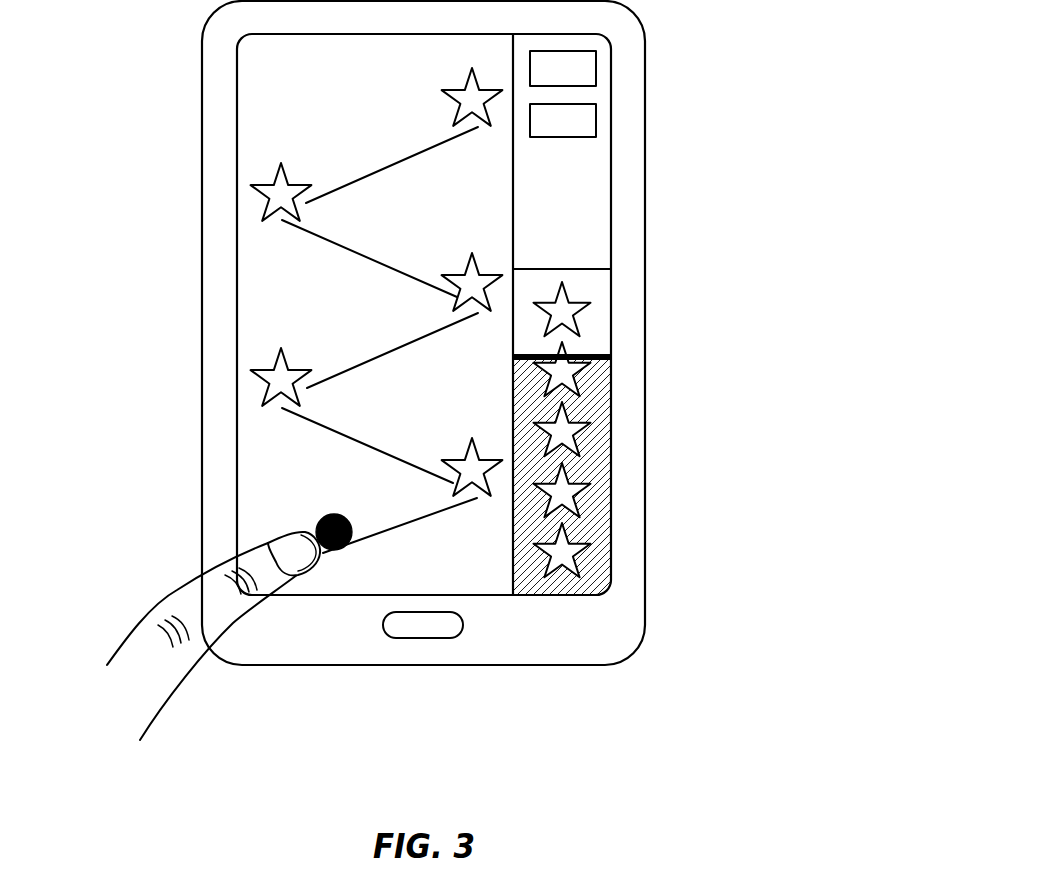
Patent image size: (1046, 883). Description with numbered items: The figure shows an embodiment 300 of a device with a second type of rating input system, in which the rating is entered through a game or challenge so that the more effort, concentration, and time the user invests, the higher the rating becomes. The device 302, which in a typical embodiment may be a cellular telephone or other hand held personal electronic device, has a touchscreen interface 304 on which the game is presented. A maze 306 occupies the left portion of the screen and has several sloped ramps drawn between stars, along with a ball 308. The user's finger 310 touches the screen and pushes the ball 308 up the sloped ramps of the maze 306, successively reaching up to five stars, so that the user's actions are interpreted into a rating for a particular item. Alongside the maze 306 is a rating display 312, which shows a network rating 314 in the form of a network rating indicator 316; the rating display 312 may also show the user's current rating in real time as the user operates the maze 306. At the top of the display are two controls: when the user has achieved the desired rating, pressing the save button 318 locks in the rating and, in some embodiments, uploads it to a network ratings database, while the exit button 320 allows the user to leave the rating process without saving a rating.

The embodiment showing a device with a rating input system 300 is at (612, 700).
The device 302 is at (460, 665).
The touchscreen interface 304 is at (563, 597).
The maze 306 is at (277, 436).
The ball 308 is at (313, 528).
The user's finger 310 is at (188, 673).
The rating display 312 is at (590, 312).
The network rating 314 is at (573, 247).
The network rating indicator 316 is at (585, 357).
The save button 318 is at (596, 74).
The exit button 320 is at (596, 134).